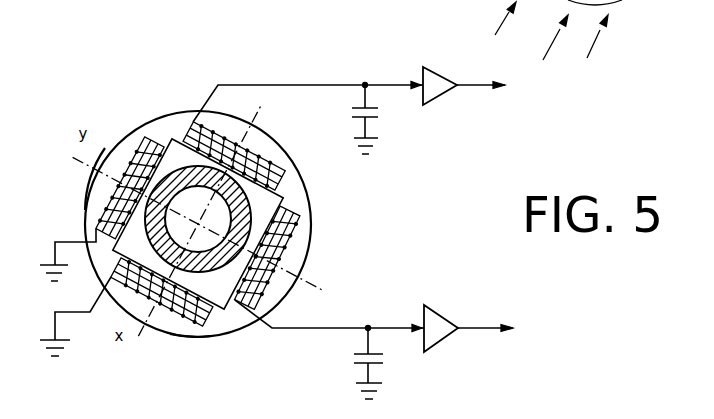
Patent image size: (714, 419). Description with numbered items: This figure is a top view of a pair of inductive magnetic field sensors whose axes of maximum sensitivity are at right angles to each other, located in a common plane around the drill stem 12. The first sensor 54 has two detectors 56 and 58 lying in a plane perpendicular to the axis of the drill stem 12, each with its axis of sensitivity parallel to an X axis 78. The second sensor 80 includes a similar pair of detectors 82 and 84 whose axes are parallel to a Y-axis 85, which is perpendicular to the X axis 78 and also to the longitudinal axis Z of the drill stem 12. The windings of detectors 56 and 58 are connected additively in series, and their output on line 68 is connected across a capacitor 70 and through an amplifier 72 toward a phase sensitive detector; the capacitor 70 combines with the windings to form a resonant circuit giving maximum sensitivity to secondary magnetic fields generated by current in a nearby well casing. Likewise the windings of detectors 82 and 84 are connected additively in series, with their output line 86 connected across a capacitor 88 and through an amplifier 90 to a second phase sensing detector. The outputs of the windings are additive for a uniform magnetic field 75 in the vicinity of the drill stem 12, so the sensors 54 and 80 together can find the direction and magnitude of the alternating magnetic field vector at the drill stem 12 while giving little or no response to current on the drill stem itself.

The drill stem 12 is at (165, 112).
The sensor 54 is at (77, 172).
The detector 56 is at (97, 204).
The detector 58 is at (287, 233).
The line 68 is at (293, 331).
The capacitor 70 is at (380, 364).
The amplifier 72 is at (440, 342).
The uniform magnetic field 75 is at (607, 47).
The X axis 78 is at (132, 333).
The second sensor 80 is at (190, 348).
The detector 82 is at (224, 329).
The detector 84 is at (188, 101).
The Y-axis 85 is at (96, 160).
The output line 86 is at (278, 85).
The capacitor 88 is at (386, 120).
The amplifier 90 is at (430, 66).